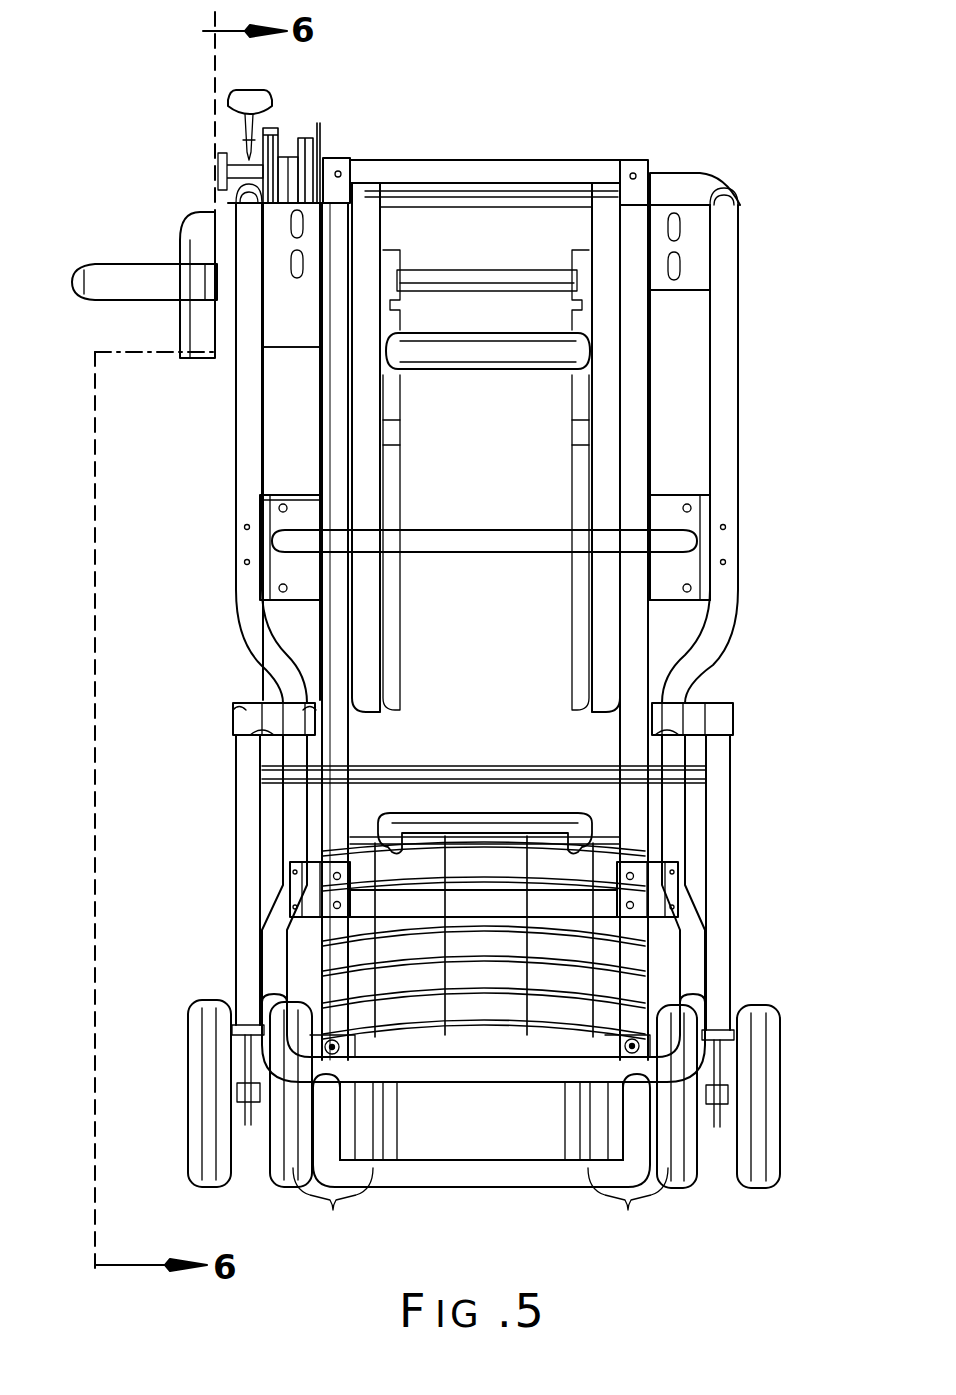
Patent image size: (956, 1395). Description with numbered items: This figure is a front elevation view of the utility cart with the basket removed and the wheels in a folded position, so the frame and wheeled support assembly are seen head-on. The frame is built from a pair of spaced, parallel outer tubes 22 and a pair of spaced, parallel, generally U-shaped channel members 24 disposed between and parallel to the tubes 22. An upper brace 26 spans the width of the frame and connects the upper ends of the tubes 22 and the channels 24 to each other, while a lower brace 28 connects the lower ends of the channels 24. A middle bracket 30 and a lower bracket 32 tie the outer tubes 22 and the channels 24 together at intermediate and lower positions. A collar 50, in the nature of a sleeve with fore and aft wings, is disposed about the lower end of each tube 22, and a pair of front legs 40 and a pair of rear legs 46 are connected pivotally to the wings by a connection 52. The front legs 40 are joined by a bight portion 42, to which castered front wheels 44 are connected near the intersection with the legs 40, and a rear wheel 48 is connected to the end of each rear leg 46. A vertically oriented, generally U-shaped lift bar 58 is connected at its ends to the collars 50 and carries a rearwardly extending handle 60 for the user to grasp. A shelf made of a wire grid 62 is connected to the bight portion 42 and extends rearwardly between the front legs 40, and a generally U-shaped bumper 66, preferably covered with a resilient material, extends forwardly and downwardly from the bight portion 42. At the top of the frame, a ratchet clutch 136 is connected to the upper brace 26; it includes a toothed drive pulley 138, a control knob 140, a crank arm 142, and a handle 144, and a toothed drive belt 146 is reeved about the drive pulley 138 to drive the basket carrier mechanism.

The outer tube 22 is at (238, 412).
The channel member 24 is at (330, 465).
The upper brace 26 is at (516, 228).
The lower brace 28 is at (512, 905).
The middle bracket 30 is at (280, 562).
The lower bracket 32 is at (300, 880).
The front leg 40 is at (267, 1017).
The bight portion 42 is at (490, 1082).
The castered front wheel 44 is at (333, 1210).
The rear leg 46 is at (245, 953).
The rear wheel 48 is at (190, 1112).
The collar 50 is at (280, 712).
The pivotal connection 52 is at (235, 718).
The lift bar 58 is at (388, 450).
The handle 60 is at (472, 360).
The wire grid 62 is at (475, 960).
The bumper 66 is at (480, 1175).
The ratchet clutch 136 is at (272, 135).
The toothed drive pulley 138 is at (290, 150).
The control knob 140 is at (256, 88).
The crank arm 142 is at (182, 158).
The handle 144 is at (130, 262).
The toothed drive belt 146 is at (300, 378).